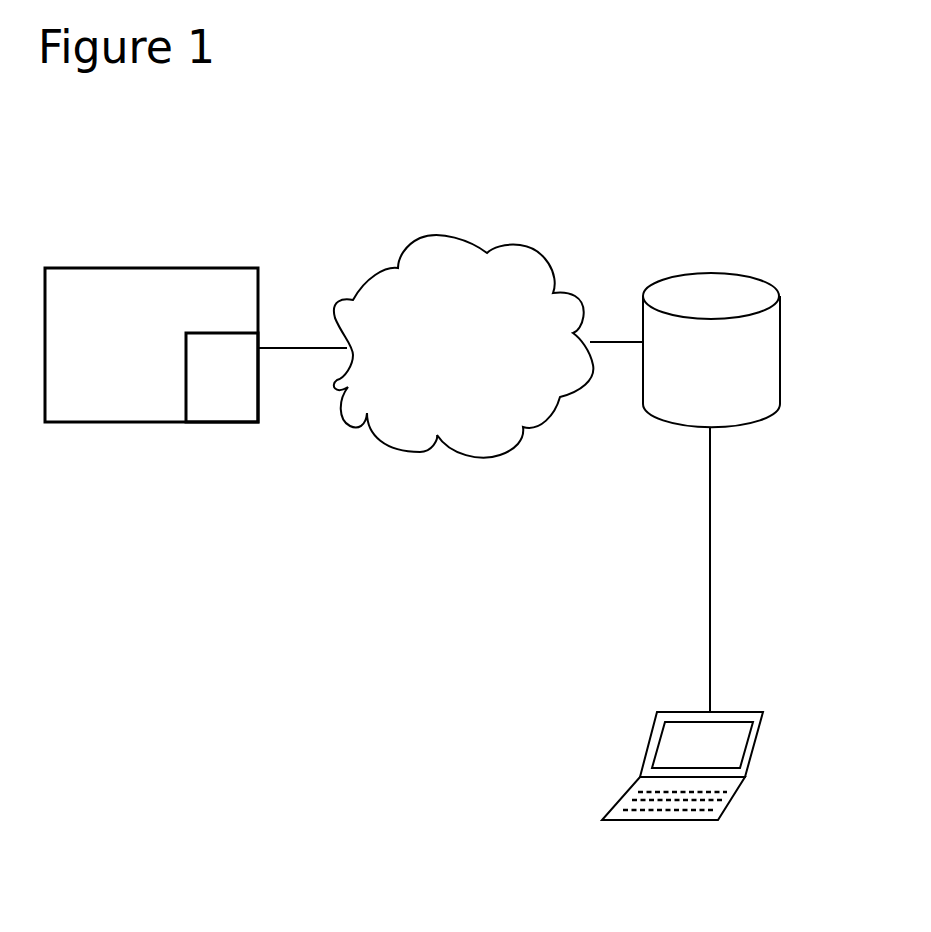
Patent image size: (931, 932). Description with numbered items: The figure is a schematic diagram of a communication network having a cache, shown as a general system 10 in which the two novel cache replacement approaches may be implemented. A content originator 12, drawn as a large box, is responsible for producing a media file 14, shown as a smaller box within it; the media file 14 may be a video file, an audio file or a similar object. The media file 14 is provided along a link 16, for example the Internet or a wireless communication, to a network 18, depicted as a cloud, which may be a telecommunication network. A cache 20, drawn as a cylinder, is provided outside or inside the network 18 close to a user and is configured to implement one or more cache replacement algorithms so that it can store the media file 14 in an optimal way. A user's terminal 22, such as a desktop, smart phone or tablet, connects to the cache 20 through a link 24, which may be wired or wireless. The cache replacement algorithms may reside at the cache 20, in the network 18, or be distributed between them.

The system 10 is at (600, 137).
The content originator 12 is at (137, 267).
The media file 14 is at (215, 388).
The link 16 is at (299, 343).
The network 18 is at (477, 344).
The cache 20 is at (780, 352).
The user's terminal 22 is at (762, 723).
The link 24 is at (709, 602).